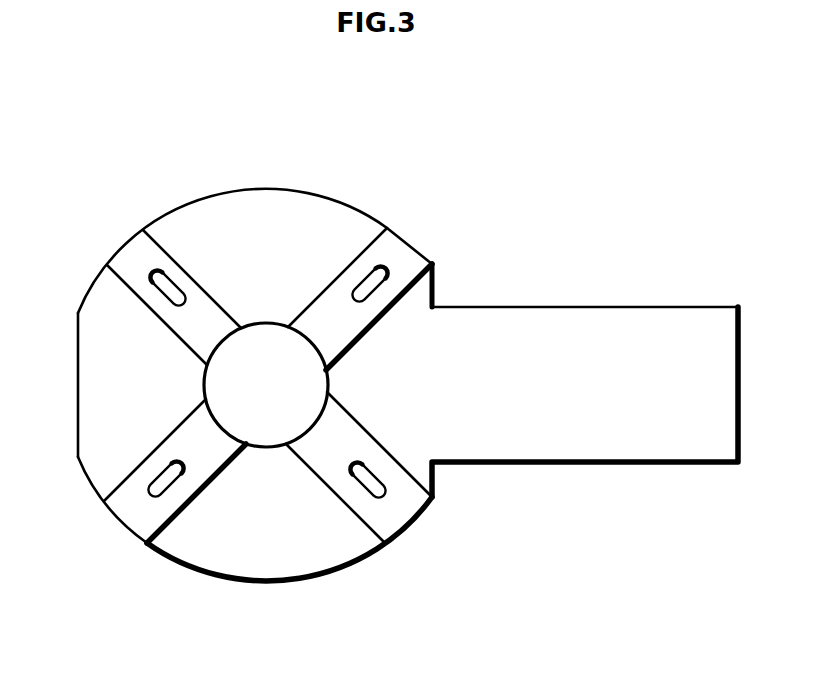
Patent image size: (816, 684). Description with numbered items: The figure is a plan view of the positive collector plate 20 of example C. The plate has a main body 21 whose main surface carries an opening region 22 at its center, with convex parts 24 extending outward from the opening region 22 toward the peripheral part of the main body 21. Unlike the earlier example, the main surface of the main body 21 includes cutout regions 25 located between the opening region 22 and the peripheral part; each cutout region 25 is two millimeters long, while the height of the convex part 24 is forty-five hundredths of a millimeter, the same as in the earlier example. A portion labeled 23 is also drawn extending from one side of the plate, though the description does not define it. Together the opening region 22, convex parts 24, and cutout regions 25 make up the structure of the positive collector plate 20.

The positive collector plate 20 is at (251, 187).
The main body 21 is at (90, 356).
The opening region 22 is at (260, 377).
The shaft portion 23 is at (643, 318).
The convex part 24 is at (395, 246).
The cutout region 25 is at (145, 281).